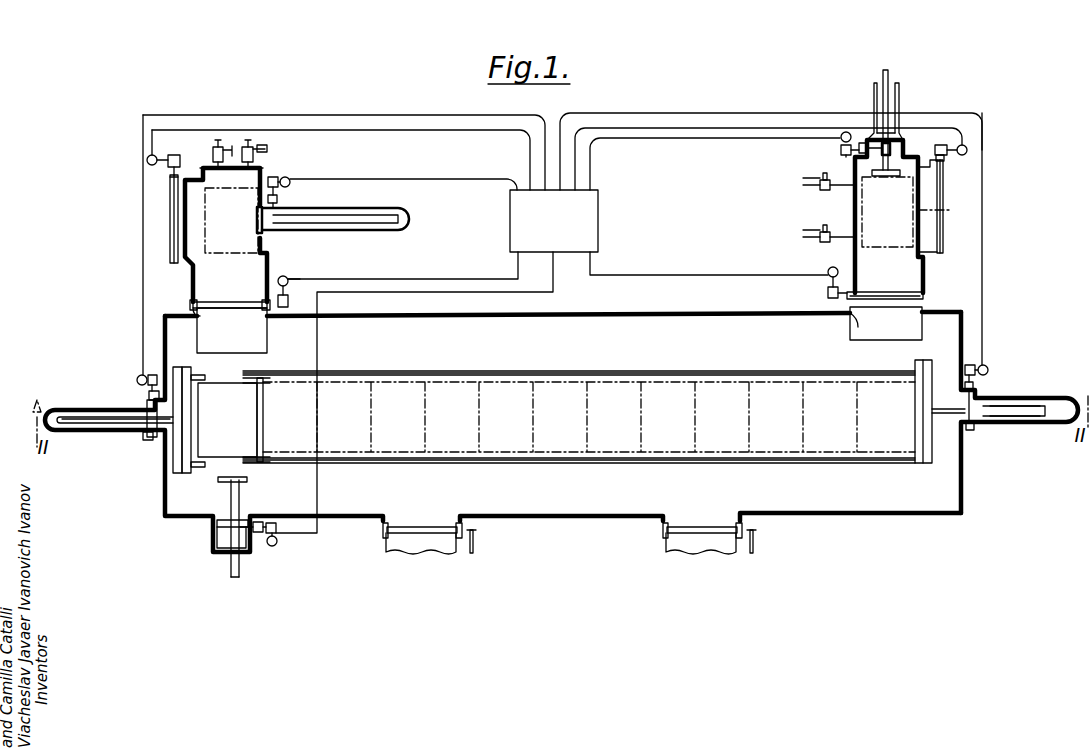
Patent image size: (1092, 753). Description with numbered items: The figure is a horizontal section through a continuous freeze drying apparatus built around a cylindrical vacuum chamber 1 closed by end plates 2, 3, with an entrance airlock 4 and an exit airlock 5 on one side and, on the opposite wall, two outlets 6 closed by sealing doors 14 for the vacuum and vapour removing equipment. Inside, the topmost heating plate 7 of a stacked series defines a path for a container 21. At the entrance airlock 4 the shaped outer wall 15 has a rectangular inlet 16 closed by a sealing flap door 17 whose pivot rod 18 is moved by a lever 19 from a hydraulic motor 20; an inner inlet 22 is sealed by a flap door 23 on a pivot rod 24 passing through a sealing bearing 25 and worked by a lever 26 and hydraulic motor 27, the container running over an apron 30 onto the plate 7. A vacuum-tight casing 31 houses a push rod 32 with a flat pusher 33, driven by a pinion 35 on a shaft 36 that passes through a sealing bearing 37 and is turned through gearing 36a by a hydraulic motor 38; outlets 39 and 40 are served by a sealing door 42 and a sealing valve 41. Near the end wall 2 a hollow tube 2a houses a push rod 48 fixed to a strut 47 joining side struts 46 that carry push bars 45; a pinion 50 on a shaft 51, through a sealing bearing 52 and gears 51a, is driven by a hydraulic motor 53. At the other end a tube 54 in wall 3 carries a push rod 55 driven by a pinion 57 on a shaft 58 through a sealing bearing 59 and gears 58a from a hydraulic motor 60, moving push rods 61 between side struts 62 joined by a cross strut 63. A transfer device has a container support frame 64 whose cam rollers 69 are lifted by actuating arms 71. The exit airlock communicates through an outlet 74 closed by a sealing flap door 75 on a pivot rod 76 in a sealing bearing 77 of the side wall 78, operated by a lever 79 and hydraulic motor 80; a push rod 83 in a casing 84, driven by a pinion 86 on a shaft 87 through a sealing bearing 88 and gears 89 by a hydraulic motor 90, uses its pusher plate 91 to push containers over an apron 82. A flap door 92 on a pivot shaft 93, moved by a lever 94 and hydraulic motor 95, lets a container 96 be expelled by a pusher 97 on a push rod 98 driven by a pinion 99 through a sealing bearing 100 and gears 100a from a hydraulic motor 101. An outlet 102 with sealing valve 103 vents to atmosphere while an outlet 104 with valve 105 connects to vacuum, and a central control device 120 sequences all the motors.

The vacuum chamber 1 is at (630, 313).
The end plate 2 is at (962, 500).
The hollow tube 2a is at (1060, 398).
The end plate 3 is at (165, 500).
The entrance airlock 4 is at (950, 230).
The exit airlock 5 is at (165, 243).
The outlet 6 is at (380, 525).
The heating plate 7 is at (830, 372).
The sealing door 14 is at (418, 527).
The outer wall 15 is at (855, 250).
The rectangular inlet 16 is at (935, 245).
The sealing flap door 17 is at (943, 186).
The pivot rod 18 is at (944, 160).
The lever 19 is at (947, 147).
The hydraulic motor 20 is at (967, 150).
The container 21 is at (620, 380).
The inlet 22 is at (855, 310).
The flap door 23 is at (895, 292).
The pivot rod 24 is at (828, 297).
The sealing bearing 25 is at (860, 292).
The lever 26 is at (828, 290).
The hydraulic motor 27 is at (828, 268).
The apron 30 is at (886, 323).
The vacuum-tight casing 31 is at (899, 105).
The push rod 32 is at (890, 80).
The flat pusher 33 is at (895, 177).
The pinion 35 is at (900, 134).
The shaft 36 is at (860, 143).
The gearing 36a is at (841, 150).
The sealing bearing 37 is at (876, 143).
The hydraulic motor 38 is at (842, 134).
The outlet 39 is at (832, 180).
The outlet 40 is at (830, 232).
The sealing valve 41 is at (820, 242).
The sealing door 42 is at (820, 190).
The push bars 45 is at (930, 409).
The side struts 46 is at (925, 362).
The strut 47 is at (960, 440).
The push rod 48 is at (1020, 405).
The pinion 50 is at (966, 429).
The shaft 51 is at (975, 386).
The gears 51a is at (975, 365).
The sealing bearing 52 is at (965, 386).
The hydraulic motor 53 is at (988, 370).
The tube 54 is at (60, 410).
The push rod 55 is at (105, 417).
The pinion 57 is at (145, 432).
The shaft 58 is at (160, 440).
The gears 58a is at (148, 378).
The sealing bearing 59 is at (149, 395).
The hydraulic motor 60 is at (137, 379).
The push rods 61 is at (200, 376).
The side struts 62 is at (178, 367).
The cross strut 63 is at (182, 470).
The container support frame 64 is at (227, 420).
The cam roller 69 is at (262, 378).
The actuating arms 71 is at (510, 371).
The outlet 74 is at (195, 312).
The sealing flap door 75 is at (250, 302).
The pivot rod 76 is at (280, 293).
The sealing bearing 77 is at (270, 300).
The side wall 78 is at (193, 288).
The lever 79 is at (295, 283).
The hydraulic motor 80 is at (288, 280).
The apron 82 is at (232, 330).
The push rod 83 is at (231, 560).
The casing 84 is at (235, 575).
The pinion 86 is at (213, 535).
The shaft 87 is at (220, 520).
The sealing bearing 88 is at (260, 522).
The gears 89 is at (278, 523).
The hydraulic motor 90 is at (275, 545).
The pusher plate 91 is at (240, 481).
The flap door 92 is at (170, 200).
The pivot shaft 93 is at (170, 177).
The lever 94 is at (172, 155).
The hydraulic motor 95 is at (147, 161).
The container 96 is at (200, 221).
The pusher 97 is at (257, 228).
The push rod 98 is at (340, 215).
The pinion 99 is at (257, 212).
The sealing bearing 100 is at (278, 199).
The gears 100a is at (275, 177).
The hydraulic motor 101 is at (290, 180).
The outlet 102 is at (249, 140).
The sealing valve 103 is at (267, 149).
The outlet 104 is at (219, 140).
The valve 105 is at (213, 152).
The central control device 120 is at (562, 196).